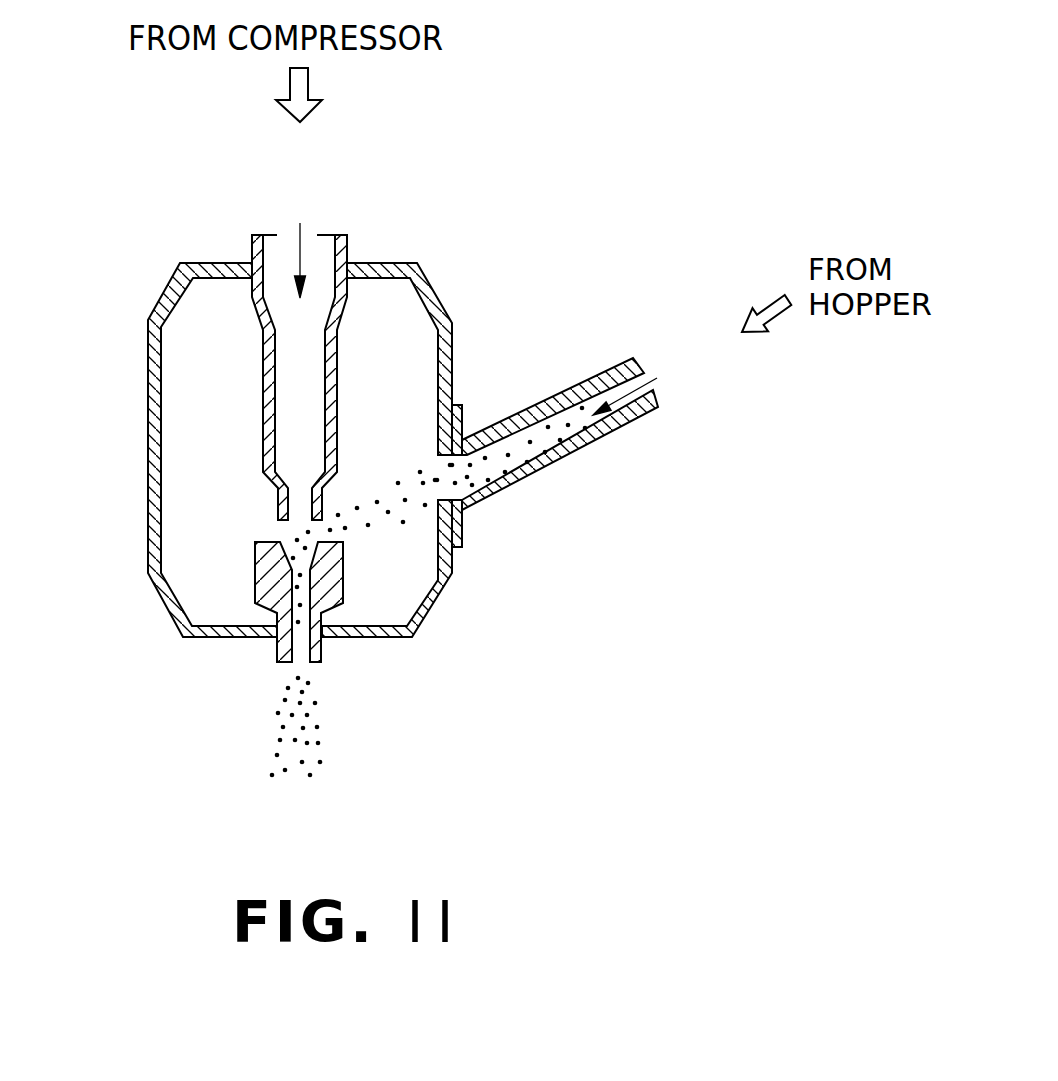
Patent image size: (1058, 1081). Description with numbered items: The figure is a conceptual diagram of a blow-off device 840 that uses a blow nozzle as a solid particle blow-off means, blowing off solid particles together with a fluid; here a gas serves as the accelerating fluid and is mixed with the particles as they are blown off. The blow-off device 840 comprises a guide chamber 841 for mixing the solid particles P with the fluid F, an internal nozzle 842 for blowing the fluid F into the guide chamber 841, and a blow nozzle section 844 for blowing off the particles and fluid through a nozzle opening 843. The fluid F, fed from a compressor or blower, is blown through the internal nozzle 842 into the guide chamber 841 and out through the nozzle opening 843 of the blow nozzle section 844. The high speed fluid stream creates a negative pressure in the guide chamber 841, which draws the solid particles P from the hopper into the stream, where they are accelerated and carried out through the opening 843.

The blow-off device 840 is at (467, 617).
The guide chamber 841 is at (200, 358).
The internal nozzle 842 is at (277, 505).
The nozzle opening 843 is at (297, 662).
The blow nozzle section 844 is at (277, 645).